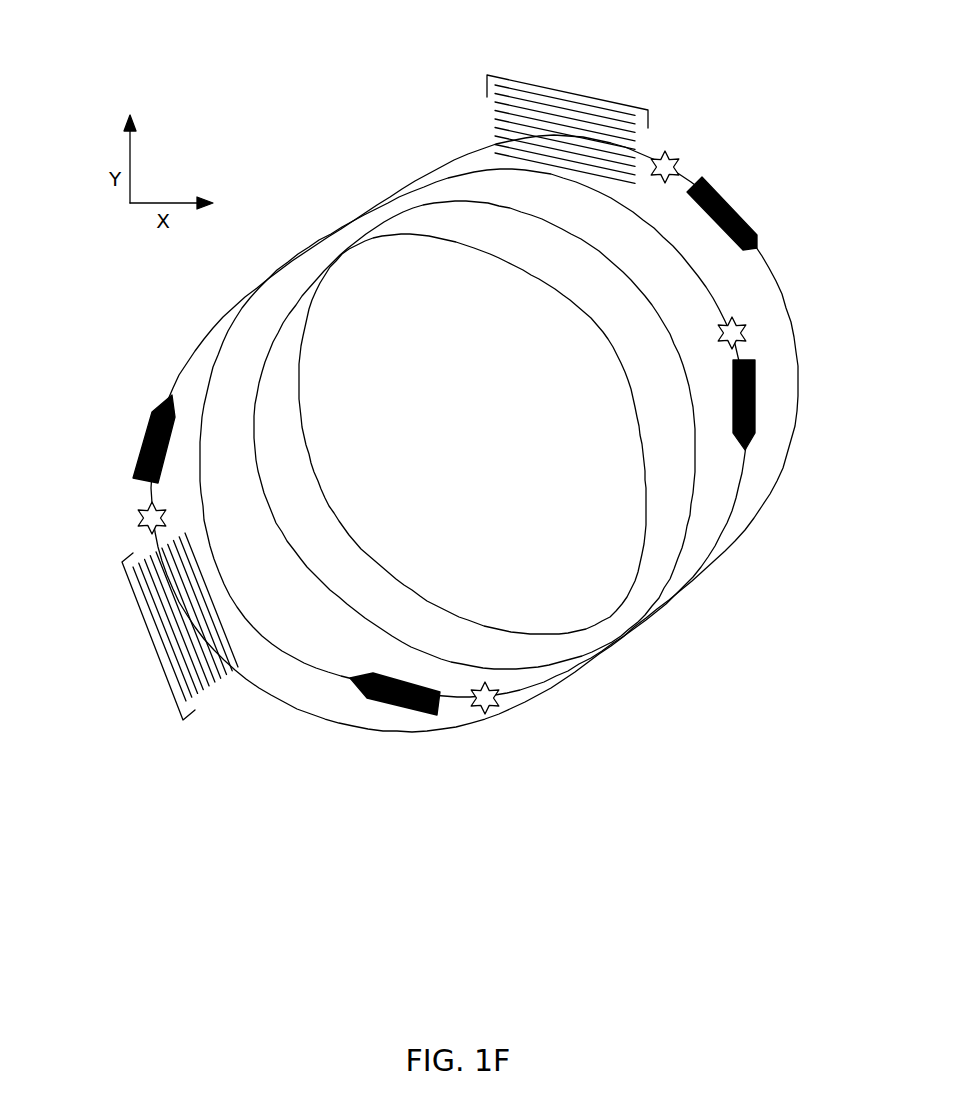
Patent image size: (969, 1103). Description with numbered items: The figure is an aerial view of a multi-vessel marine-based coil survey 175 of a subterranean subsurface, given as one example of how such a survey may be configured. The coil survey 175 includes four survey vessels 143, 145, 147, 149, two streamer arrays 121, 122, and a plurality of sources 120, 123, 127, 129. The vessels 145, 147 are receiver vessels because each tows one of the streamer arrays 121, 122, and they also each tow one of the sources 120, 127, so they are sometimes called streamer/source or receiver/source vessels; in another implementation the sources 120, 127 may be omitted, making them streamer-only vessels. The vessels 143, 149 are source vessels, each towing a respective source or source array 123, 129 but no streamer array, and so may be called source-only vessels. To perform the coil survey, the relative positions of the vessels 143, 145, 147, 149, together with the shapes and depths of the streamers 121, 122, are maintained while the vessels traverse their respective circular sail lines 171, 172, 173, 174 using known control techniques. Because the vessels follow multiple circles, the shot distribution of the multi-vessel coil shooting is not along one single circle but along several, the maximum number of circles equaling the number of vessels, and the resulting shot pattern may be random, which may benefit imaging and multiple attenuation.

The multi-vessel marine-based coil survey 175 is at (222, 55).
The sail line 174 is at (790, 447).
The sail line 173 is at (712, 550).
The sail line 172 is at (658, 590).
The sail line 171 is at (618, 607).
The streamer array 122 is at (568, 96).
The streamer array 121 is at (153, 640).
The source 120 is at (137, 518).
The source 123 is at (744, 322).
The source 127 is at (672, 152).
The source 129 is at (487, 715).
The survey vessel 143 is at (757, 392).
The survey vessel 145 is at (152, 410).
The survey vessel 147 is at (748, 218).
The survey vessel 149 is at (426, 717).